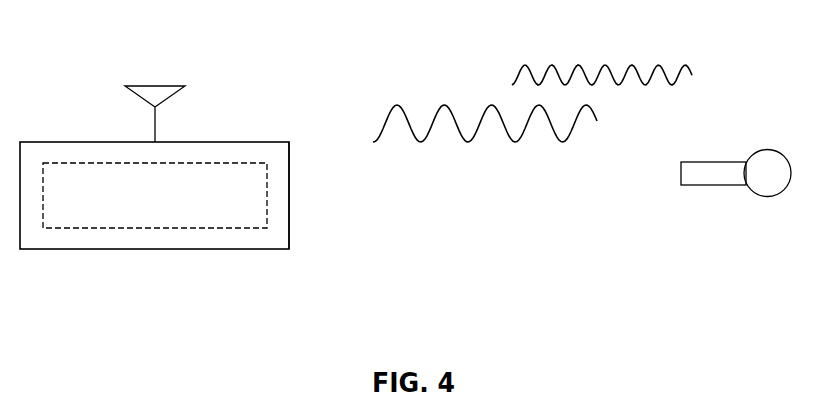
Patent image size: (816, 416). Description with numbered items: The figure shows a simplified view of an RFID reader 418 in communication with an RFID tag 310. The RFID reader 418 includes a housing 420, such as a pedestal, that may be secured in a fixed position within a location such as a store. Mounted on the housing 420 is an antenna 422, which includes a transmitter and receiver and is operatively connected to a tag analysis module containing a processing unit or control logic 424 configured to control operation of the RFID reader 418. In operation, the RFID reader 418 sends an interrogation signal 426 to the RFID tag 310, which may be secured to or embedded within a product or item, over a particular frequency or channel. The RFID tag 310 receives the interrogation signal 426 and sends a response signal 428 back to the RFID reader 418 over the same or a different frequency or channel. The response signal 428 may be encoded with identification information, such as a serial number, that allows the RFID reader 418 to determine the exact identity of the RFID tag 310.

The RFID tag 310 is at (718, 162).
The RFID reader 418 is at (55, 142).
The housing 420 is at (258, 142).
The antenna 422 is at (160, 84).
The control logic 424 is at (232, 229).
The interrogation signal 426 is at (515, 143).
The response signal 428 is at (632, 72).